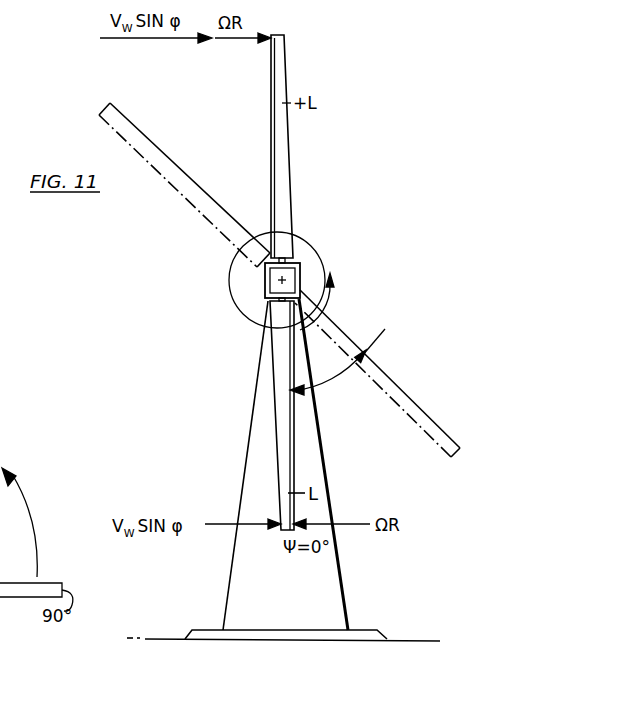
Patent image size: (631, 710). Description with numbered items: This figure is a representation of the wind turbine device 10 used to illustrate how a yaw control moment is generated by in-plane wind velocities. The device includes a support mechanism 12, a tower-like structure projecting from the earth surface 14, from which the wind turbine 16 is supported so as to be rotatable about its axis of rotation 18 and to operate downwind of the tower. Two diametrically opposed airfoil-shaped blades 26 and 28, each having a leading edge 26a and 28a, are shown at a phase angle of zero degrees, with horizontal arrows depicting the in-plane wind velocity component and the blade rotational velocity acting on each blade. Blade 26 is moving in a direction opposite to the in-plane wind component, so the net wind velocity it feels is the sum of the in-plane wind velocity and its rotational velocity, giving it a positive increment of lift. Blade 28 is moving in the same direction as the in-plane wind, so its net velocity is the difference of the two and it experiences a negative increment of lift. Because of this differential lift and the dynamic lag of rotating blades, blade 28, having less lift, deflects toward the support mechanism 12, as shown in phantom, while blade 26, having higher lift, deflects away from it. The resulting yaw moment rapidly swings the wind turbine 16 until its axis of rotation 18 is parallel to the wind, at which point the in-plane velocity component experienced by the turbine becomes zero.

The wind turbine device 10 is at (401, 188).
The support mechanism 12 is at (347, 597).
The earth surface 14 is at (402, 640).
The wind turbine 16 is at (313, 171).
The axis of rotation 18 is at (282, 280).
The blade 26 is at (283, 140).
The leading edge 26a is at (270, 178).
The blade 28 is at (417, 410).
The leading edge 28a is at (292, 433).